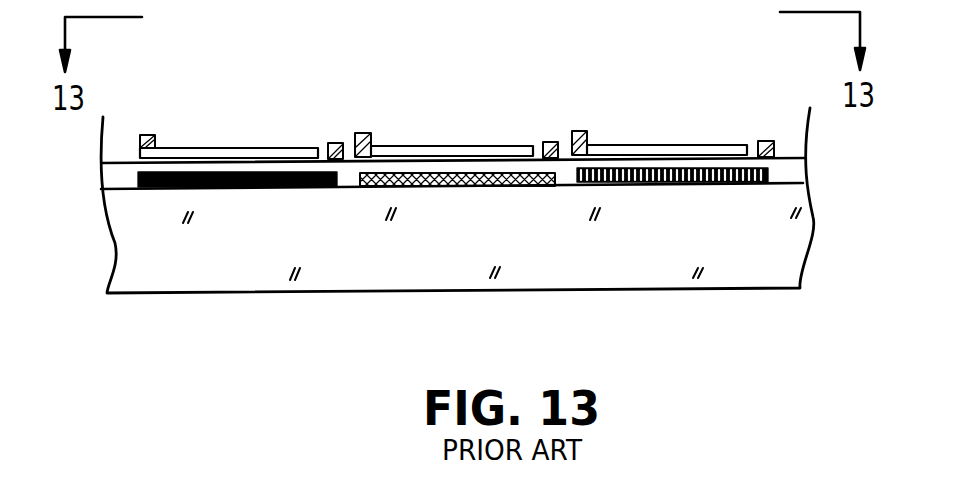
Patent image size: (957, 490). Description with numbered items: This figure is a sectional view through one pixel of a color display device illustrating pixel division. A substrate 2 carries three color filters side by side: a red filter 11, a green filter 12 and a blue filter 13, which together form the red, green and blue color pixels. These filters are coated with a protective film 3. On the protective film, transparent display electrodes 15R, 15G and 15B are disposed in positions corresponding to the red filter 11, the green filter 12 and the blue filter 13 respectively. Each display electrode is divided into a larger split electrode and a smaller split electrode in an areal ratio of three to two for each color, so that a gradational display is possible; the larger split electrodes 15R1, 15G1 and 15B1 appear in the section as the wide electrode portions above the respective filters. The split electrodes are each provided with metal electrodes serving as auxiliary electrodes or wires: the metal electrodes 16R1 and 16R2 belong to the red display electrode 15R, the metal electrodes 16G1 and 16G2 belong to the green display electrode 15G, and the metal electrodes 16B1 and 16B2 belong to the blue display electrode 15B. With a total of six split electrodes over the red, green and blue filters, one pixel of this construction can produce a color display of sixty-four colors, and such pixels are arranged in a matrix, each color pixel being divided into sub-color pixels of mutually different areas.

The substrate 2 is at (428, 279).
The protective film 3 is at (787, 172).
The red filter 11 is at (243, 188).
The green filter 12 is at (468, 188).
The blue filter 13 is at (680, 187).
The transparent display electrode 15R is at (202, 118).
The larger split electrode 15R1 is at (250, 147).
The metal electrode 16R1 is at (150, 134).
The metal electrode 16R2 is at (335, 142).
The transparent display electrode 15G is at (423, 118).
The larger split electrode 15G1 is at (452, 118).
The metal electrode 16G1 is at (363, 132).
The metal electrode 16G2 is at (550, 141).
The transparent display electrode 15B is at (715, 120).
The larger split electrode 15B1 is at (665, 144).
The metal electrode 16B1 is at (580, 130).
The metal electrode 16B2 is at (766, 140).